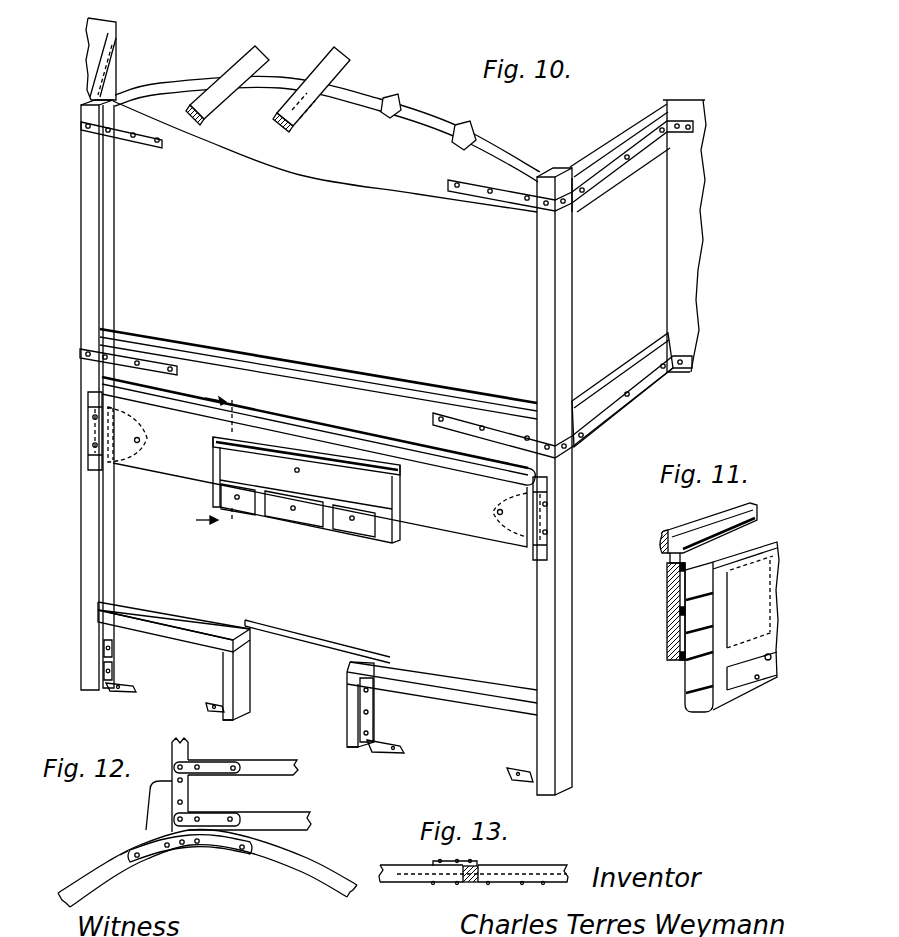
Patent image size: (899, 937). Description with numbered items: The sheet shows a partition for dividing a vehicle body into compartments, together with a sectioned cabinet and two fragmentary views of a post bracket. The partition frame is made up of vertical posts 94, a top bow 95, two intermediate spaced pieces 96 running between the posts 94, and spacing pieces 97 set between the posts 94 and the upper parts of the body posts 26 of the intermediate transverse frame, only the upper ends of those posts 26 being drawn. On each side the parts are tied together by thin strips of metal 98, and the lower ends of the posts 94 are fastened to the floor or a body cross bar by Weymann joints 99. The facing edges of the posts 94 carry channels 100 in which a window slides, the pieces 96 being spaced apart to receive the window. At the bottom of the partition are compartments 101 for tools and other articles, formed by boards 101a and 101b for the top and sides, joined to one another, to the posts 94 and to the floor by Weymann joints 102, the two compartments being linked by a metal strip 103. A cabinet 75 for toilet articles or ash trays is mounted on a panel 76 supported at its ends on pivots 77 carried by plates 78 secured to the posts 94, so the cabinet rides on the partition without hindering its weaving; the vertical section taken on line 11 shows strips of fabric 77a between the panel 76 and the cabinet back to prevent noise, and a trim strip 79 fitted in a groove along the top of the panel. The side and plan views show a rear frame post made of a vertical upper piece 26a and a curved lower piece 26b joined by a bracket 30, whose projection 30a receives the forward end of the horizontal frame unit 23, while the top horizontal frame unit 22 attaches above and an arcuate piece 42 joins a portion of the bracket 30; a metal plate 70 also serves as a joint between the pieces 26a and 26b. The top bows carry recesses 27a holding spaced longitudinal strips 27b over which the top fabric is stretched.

In FIG. 10, the section line 11— 11 is at (212, 461).
In FIG. 12, the top horizontal frame unit 22 is at (272, 757).
In FIG. 13, the top horizontal frame unit 22 is at (505, 876).
In FIG. 12, the horizontal frame unit 23 is at (290, 818).
In FIG. 10, the vertical post 26 is at (87, 37).
In FIG. 12, the upper post piece 26a is at (188, 753).
In FIG. 13, the upper post piece 26a is at (480, 867).
In FIG. 12, the lower post piece 26b is at (122, 857).
In FIG. 13, the lower post piece 26b is at (417, 878).
In FIG. 10, the recess 27a is at (223, 88).
In FIG. 10, the longitudinally extending strip 27b is at (333, 55).
In FIG. 12, the bracket 30 is at (225, 850).
In FIG. 13, the bracket 30 is at (545, 873).
In FIG. 12, the bracket projection 30a is at (232, 806).
In FIG. 13, the bracket projection 30a is at (514, 873).
In FIG. 12, the arcuate piece 42 is at (300, 863).
In FIG. 12, the metal plate 70 is at (147, 807).
In FIG. 13, the metal plate 70 is at (450, 863).
In FIG. 10, the cabinet 75 is at (252, 443).
In FIG. 11, the cabinet 75 is at (773, 541).
In FIG. 10, the panel 76 is at (474, 518).
In FIG. 11, the panel 76 is at (666, 627).
In FIG. 10, the pivot 77 is at (142, 438).
In FIG. 11, the fabric strip 77a is at (679, 602).
In FIG. 10, the plate 78 is at (91, 433).
In FIG. 10, the trim strip 79 is at (366, 440).
In FIG. 11, the trim strip 79 is at (730, 508).
In FIG. 10, the vertical post 94 is at (90, 297).
In FIG. 10, the top bow 95 is at (408, 137).
In FIG. 10, the intermediate spaced piece 96 is at (352, 397).
In FIG. 10, the spacing piece 97 is at (90, 66).
In FIG. 10, the thin metal strip 98 is at (152, 141).
In FIG. 10, the Weymann joint 99 is at (116, 691).
In FIG. 10, the channel 100 is at (110, 207).
In FIG. 10, the compartment 101 is at (314, 700).
In FIG. 10, the compartment top board 101a is at (186, 620).
In FIG. 10, the compartment side board 101b is at (243, 677).
In FIG. 10, the Weymann joint 102 is at (210, 705).
In FIG. 10, the metal strip 103 is at (313, 640).